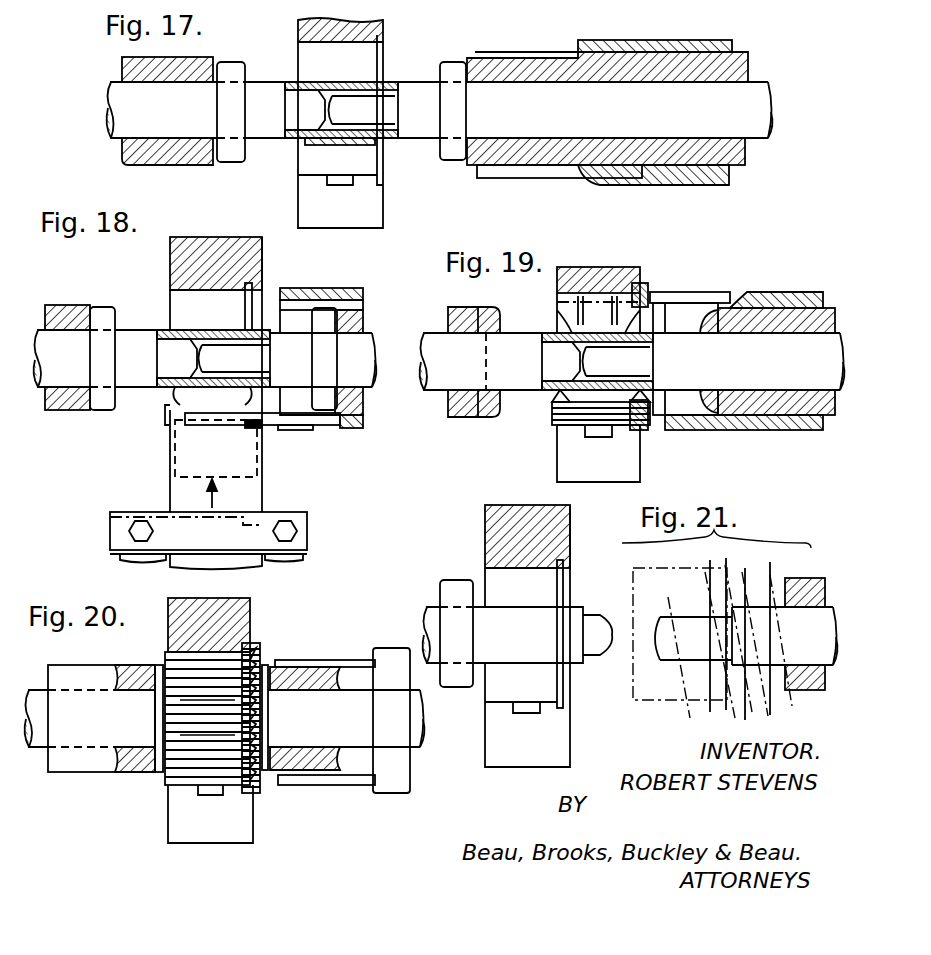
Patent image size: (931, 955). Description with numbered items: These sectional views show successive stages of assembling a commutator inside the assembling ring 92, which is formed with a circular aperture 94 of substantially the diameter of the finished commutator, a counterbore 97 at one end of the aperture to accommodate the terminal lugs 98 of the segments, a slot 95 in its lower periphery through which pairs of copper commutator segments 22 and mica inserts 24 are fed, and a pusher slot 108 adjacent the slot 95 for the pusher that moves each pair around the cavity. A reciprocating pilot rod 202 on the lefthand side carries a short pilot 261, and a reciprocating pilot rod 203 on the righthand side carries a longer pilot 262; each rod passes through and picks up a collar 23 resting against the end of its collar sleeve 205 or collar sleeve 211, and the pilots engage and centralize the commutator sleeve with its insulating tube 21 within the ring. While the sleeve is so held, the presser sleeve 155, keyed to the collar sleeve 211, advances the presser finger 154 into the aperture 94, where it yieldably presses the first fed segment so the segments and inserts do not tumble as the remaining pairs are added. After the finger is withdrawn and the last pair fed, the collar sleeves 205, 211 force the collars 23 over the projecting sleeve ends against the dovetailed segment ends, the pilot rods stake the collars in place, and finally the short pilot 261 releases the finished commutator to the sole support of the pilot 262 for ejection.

In FIG. 17, the insulating tube 21 is at (349, 145).
In FIG. 18, the insulating tube 21 is at (222, 328).
In FIG. 18, the copper commutator segments 22 is at (166, 413).
In FIG. 19, the copper commutator segments 22 is at (556, 407).
In FIG. 20, the copper commutator segments 22 is at (258, 650).
In FIG. 17, the collar 23 is at (226, 73).
In FIG. 19, the collar 23 is at (488, 419).
In FIG. 20, the collar 23 is at (160, 770).
In FIG. 20, the mica inserts 24 is at (266, 654).
In FIG. 17, the assembling ring 92 is at (383, 30).
In FIG. 18, the assembling ring 92 is at (251, 255).
In FIG. 19, the assembling ring 92 is at (574, 276).
In FIG. 20, the assembling ring 92 is at (232, 608).
In FIG. 21, the assembling ring 92 is at (563, 525).
In FIG. 17, the circular aperture 94 is at (306, 45).
In FIG. 18, the circular aperture 94 is at (171, 298).
In FIG. 21, the circular aperture 94 is at (490, 570).
In FIG. 17, the slot 95 is at (378, 221).
In FIG. 19, the slot 95 is at (643, 472).
In FIG. 20, the slot 95 is at (180, 818).
In FIG. 21, the slot 95 is at (561, 750).
In FIG. 17, the counterbore 97 is at (383, 45).
In FIG. 18, the counterbore 97 is at (254, 288).
In FIG. 21, the counterbore 97 is at (571, 563).
In FIG. 18, the terminal lugs 98 is at (258, 428).
In FIG. 19, the terminal lugs 98 is at (643, 281).
In FIG. 20, the terminal lugs 98 is at (252, 640).
In FIG. 17, the pusher slot 108 is at (341, 187).
In FIG. 19, the pusher slot 108 is at (600, 439).
In FIG. 20, the pusher slot 108 is at (209, 797).
In FIG. 21, the pusher slot 108 is at (527, 715).
In FIG. 17, the presser finger 154 is at (538, 180).
In FIG. 18, the presser finger 154 is at (288, 432).
In FIG. 19, the presser finger 154 is at (656, 300).
In FIG. 20, the presser finger 154 is at (345, 786).
In FIG. 17, the presser sleeve 155 is at (680, 48).
In FIG. 18, the presser sleeve 155 is at (364, 430).
In FIG. 19, the presser sleeve 155 is at (787, 300).
In FIG. 20, the presser sleeve 155 is at (382, 783).
In FIG. 17, the pilot rod 202 is at (172, 114).
In FIG. 18, the pilot rod 202 is at (89, 361).
In FIG. 19, the pilot rod 202 is at (492, 370).
In FIG. 20, the pilot rod 202 is at (128, 698).
In FIG. 21, the pilot rod 202 is at (540, 642).
In FIG. 17, the pilot rod 203 is at (688, 116).
In FIG. 18, the pilot rod 203 is at (364, 355).
In FIG. 19, the pilot rod 203 is at (805, 386).
In FIG. 20, the pilot rod 203 is at (338, 724).
In FIG. 21, the pilot rod 203 is at (790, 690).
In FIG. 18, the collar sleeve 205 is at (64, 315).
In FIG. 19, the collar sleeve 205 is at (455, 311).
In FIG. 20, the collar sleeve 205 is at (103, 767).
In FIG. 21, the collar sleeve 205 is at (446, 590).
In FIG. 17, the collar sleeve 211 is at (745, 63).
In FIG. 18, the collar sleeve 211 is at (364, 310).
In FIG. 19, the collar sleeve 211 is at (757, 330).
In FIG. 20, the collar sleeve 211 is at (296, 760).
In FIG. 21, the collar sleeve 211 is at (792, 596).
In FIG. 17, the pilot 261 is at (299, 143).
In FIG. 18, the pilot 261 is at (182, 360).
In FIG. 19, the pilot 261 is at (553, 352).
In FIG. 21, the pilot 261 is at (603, 652).
In FIG. 17, the pilot 262 is at (375, 121).
In FIG. 18, the pilot 262 is at (246, 370).
In FIG. 19, the pilot 262 is at (634, 370).
In FIG. 21, the pilot 262 is at (690, 652).